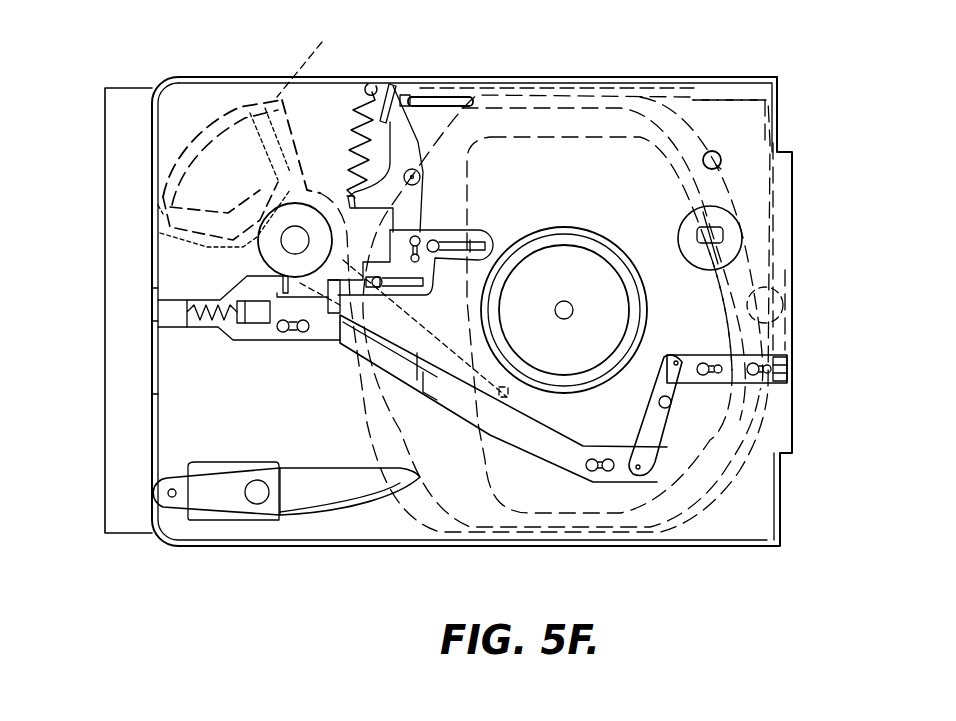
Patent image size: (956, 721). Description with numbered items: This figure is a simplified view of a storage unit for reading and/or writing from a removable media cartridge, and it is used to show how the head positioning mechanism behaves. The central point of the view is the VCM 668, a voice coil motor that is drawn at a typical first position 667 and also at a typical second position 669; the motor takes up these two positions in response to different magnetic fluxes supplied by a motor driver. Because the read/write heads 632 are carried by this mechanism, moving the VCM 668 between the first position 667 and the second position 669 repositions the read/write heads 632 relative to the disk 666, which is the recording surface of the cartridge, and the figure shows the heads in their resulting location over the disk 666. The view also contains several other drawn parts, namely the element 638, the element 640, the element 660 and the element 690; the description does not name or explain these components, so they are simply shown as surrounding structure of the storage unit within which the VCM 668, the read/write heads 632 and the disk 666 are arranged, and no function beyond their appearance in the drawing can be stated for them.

The read/write heads 632 is at (472, 447).
The release pawl 638 is at (313, 480).
The latch lever 640 is at (423, 200).
The cassette 660 is at (748, 127).
The disk 666 is at (722, 189).
The first position 667 is at (238, 98).
The VCM 668 is at (320, 61).
The second position 669 is at (161, 235).
The spring 690 is at (353, 135).